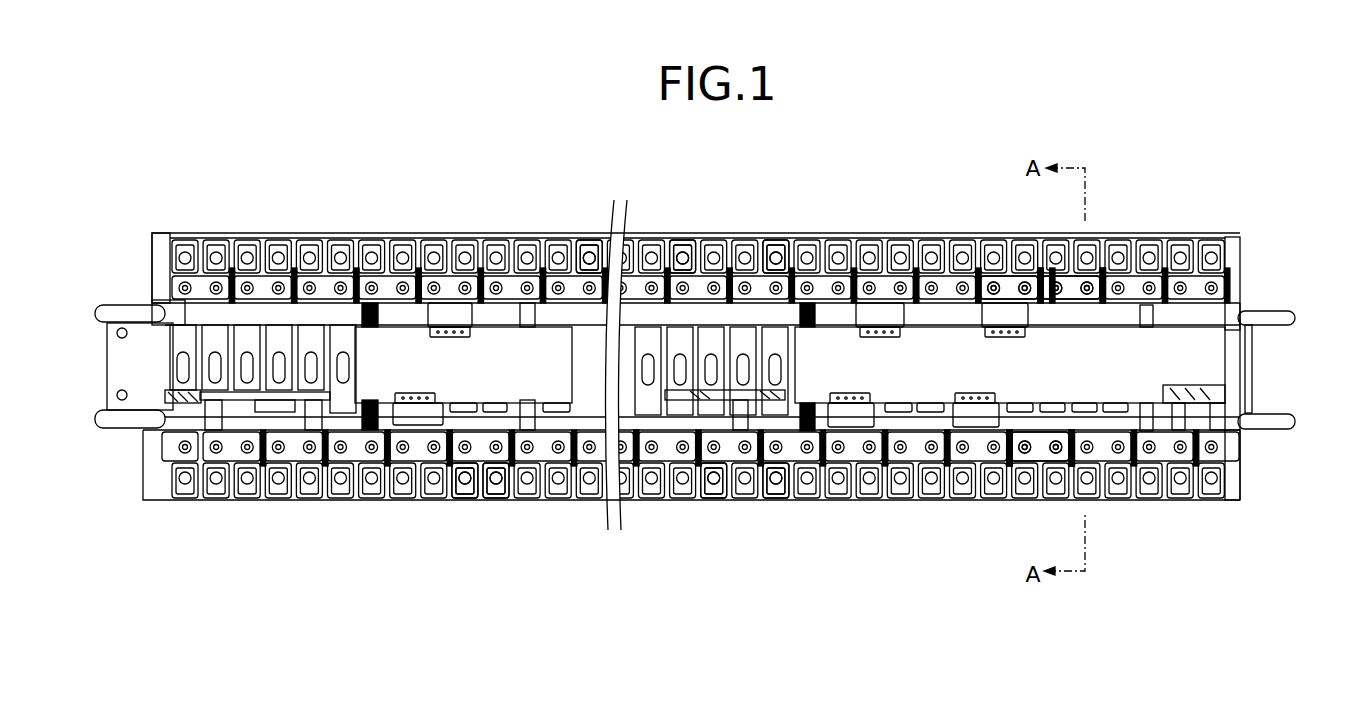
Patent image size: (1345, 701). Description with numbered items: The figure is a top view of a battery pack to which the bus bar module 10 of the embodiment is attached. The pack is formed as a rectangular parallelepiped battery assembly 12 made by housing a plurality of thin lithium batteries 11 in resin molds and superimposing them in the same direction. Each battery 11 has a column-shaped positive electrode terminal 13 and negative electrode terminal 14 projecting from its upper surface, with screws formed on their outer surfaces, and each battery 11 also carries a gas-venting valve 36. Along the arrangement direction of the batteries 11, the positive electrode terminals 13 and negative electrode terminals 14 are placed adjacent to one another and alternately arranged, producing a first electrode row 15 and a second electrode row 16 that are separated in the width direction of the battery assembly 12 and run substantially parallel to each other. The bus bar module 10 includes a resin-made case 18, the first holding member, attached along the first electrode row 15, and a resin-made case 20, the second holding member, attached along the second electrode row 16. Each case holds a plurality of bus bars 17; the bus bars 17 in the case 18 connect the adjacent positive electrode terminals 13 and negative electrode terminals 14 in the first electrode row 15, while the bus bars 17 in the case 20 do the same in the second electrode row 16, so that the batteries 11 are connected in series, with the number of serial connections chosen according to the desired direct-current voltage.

The bus bar module 10 is at (235, 210).
The battery 11 is at (497, 500).
The battery assembly 12 is at (376, 512).
The positive electrode terminal 13 is at (1022, 284).
The negative electrode terminal 14 is at (1050, 272).
The first electrode row 15 is at (1256, 291).
The second electrode row 16 is at (1256, 461).
The bus bar 17 is at (774, 262).
The case 18 is at (683, 262).
The case 20 is at (707, 500).
The gas-venting valve 36 is at (585, 262).